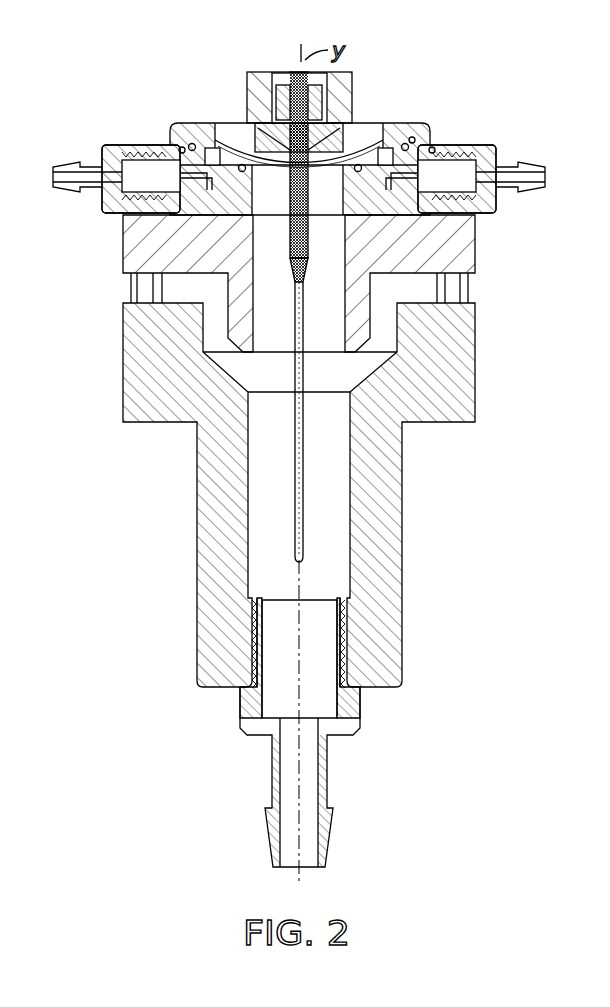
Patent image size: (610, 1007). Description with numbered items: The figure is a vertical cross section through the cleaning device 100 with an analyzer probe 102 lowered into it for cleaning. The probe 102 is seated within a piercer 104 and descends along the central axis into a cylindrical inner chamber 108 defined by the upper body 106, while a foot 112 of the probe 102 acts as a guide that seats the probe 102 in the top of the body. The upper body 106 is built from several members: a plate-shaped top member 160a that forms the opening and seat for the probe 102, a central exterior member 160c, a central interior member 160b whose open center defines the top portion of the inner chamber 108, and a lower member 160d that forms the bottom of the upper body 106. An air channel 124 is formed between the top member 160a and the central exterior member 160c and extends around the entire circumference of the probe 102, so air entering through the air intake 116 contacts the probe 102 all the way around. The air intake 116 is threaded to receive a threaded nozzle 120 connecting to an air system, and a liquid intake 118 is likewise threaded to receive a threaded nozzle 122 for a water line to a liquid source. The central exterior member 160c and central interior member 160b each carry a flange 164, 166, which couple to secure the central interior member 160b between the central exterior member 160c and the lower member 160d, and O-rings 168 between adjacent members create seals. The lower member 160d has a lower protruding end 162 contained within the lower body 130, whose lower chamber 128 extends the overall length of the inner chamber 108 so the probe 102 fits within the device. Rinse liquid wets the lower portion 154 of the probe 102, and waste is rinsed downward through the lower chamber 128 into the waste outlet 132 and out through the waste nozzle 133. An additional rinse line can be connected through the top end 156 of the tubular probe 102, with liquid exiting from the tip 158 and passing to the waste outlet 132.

The cleaning device 100 is at (474, 342).
The analyzer probe 102 is at (303, 482).
The piercer 104 is at (308, 232).
The upper body 106 is at (437, 250).
The inner chamber 108 is at (268, 306).
The foot 112 is at (247, 113).
The air intake 116 is at (152, 148).
The liquid intake 118 is at (470, 140).
The threaded nozzle 120 is at (110, 150).
The threaded nozzle 122 is at (522, 167).
The air channel 124 is at (368, 158).
The lower chamber 128 is at (268, 478).
The lower body 130 is at (215, 555).
The waste outlet 132 is at (405, 648).
The waste nozzle 133 is at (352, 715).
The lower portion of the probe 154 is at (303, 437).
The top end of the probe 156 is at (285, 84).
The tip of the probe 158 is at (298, 565).
The top member 160a is at (412, 137).
The central interior member 160b is at (432, 147).
The central exterior member 160c is at (180, 147).
The lower member 160d is at (362, 318).
The lower protruding end 162 is at (228, 330).
The flange 164 is at (138, 204).
The flange 166 is at (215, 122).
The O-rings 168 is at (191, 143).